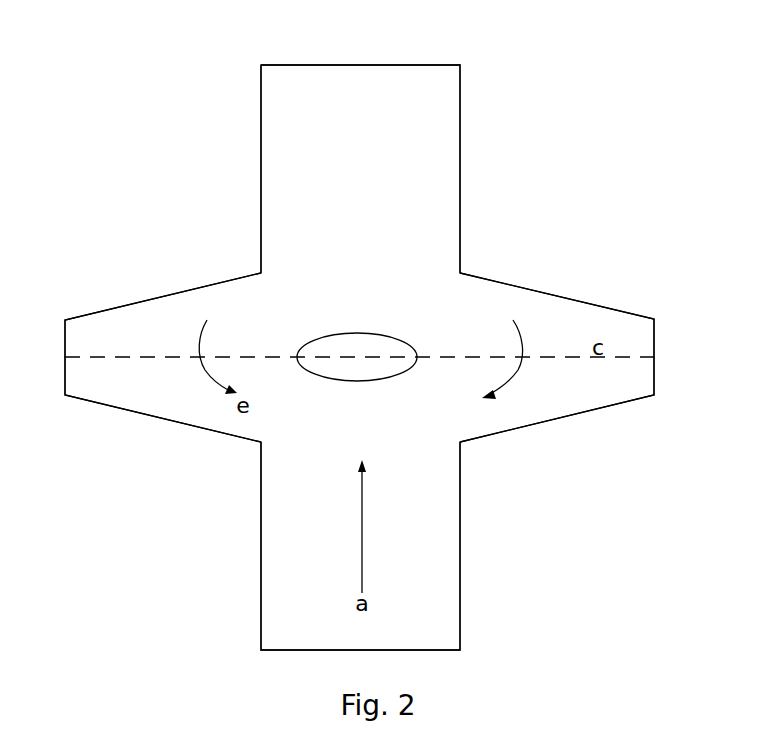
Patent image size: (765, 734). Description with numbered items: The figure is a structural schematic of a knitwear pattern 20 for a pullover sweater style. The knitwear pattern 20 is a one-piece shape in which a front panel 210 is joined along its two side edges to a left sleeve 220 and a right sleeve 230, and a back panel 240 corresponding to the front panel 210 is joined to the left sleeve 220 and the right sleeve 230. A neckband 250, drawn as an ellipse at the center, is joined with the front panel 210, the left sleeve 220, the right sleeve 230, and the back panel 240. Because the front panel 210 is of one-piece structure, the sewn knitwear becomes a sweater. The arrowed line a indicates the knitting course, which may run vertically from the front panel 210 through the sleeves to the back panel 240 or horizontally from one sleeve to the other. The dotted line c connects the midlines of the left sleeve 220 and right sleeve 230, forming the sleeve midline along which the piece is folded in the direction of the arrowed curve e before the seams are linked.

The knitwear pattern 20 is at (344, 50).
The front panel 210 is at (455, 158).
The left sleeve 220 is at (147, 310).
The right sleeve 230 is at (545, 300).
The back panel 240 is at (453, 557).
The neckband 250 is at (390, 360).